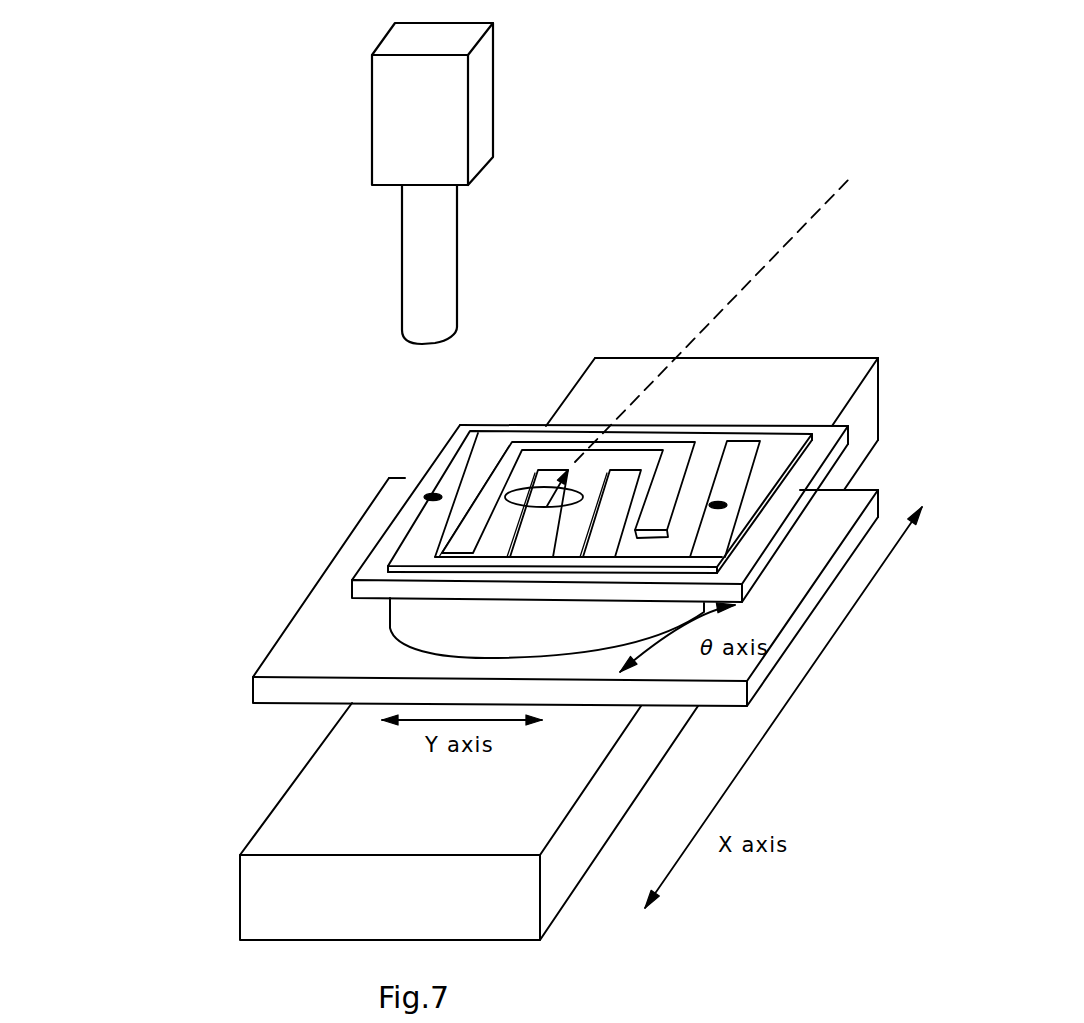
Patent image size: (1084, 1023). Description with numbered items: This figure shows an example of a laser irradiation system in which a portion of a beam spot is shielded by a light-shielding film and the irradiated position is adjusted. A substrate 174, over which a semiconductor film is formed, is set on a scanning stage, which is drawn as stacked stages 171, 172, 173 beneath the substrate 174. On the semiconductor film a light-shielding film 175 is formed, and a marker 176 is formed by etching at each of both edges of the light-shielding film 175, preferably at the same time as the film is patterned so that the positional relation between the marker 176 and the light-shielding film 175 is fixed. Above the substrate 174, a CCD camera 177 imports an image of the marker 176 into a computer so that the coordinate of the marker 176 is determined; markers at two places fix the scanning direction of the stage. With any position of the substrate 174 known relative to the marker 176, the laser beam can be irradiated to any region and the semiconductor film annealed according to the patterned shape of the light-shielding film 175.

The X-axis stage 171 is at (330, 816).
The Y-axis stage 172 is at (287, 690).
The θ-axis stage 173 is at (420, 628).
The substrate 174 is at (350, 578).
The light-shielding film 175 is at (400, 545).
The marker 176 is at (427, 492).
The CCD camera 177 is at (442, 117).